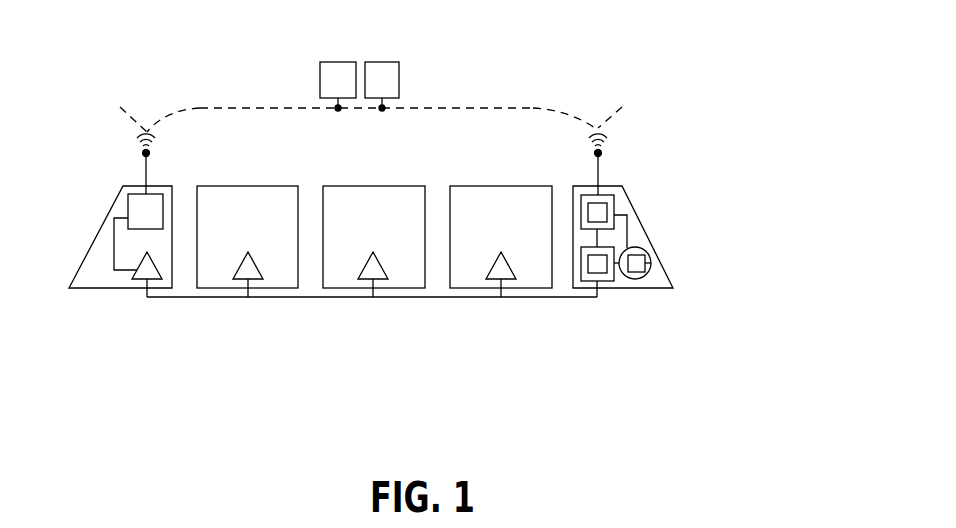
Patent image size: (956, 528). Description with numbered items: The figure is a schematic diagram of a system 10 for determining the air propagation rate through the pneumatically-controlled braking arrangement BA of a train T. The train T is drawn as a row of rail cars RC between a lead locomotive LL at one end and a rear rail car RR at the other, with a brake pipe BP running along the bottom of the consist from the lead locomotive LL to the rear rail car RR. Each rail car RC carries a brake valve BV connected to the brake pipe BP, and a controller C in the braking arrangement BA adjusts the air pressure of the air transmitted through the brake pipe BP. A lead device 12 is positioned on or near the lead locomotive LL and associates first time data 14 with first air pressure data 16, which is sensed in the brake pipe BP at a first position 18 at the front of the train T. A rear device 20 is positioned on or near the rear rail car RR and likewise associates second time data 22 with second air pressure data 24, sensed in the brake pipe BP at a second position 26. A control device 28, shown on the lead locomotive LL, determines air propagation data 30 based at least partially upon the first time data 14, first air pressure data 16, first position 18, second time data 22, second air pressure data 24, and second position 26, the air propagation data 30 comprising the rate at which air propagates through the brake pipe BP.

The system 10 is at (145, 83).
The lead device 12 is at (602, 199).
The first time data 14 is at (603, 197).
The first air pressure data 16 is at (603, 252).
The first position 18 is at (597, 304).
The rear device 20 is at (153, 194).
The second time data 22 is at (263, 52).
The second air pressure data 24 is at (427, 52).
The second position 26 is at (142, 295).
The control device 28 is at (655, 262).
The air propagation data 30 is at (652, 267).
The rail car RC is at (118, 190).
The rear rail car RR is at (90, 240).
The lead locomotive LL is at (641, 224).
The brake valve BV is at (159, 258).
The brake pipe BP is at (471, 303).
The braking arrangement BA is at (247, 311).
The train T is at (656, 166).
The controller C is at (608, 282).